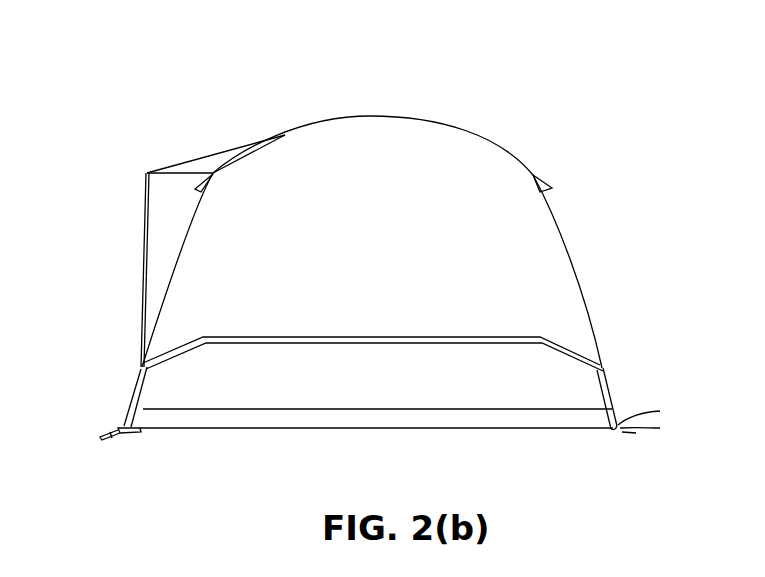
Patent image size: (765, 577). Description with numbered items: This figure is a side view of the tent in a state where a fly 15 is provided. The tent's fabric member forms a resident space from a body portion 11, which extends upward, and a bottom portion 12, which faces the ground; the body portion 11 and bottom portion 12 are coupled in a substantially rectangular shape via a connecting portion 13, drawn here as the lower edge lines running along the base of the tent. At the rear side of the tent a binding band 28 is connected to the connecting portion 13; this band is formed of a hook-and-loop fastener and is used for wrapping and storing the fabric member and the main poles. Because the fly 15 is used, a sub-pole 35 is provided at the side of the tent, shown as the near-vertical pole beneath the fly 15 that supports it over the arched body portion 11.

The body portion 11 is at (285, 383).
The bottom portion 12 is at (440, 430).
The connecting portion 13 is at (377, 452).
The fly 15 is at (197, 160).
The binding band 28 is at (650, 410).
The sub-pole 35 is at (146, 245).